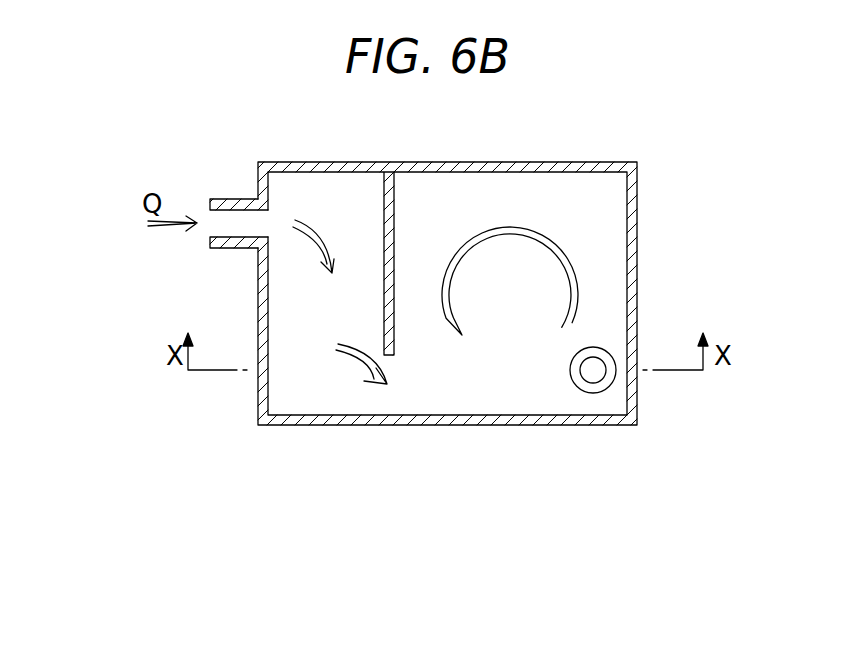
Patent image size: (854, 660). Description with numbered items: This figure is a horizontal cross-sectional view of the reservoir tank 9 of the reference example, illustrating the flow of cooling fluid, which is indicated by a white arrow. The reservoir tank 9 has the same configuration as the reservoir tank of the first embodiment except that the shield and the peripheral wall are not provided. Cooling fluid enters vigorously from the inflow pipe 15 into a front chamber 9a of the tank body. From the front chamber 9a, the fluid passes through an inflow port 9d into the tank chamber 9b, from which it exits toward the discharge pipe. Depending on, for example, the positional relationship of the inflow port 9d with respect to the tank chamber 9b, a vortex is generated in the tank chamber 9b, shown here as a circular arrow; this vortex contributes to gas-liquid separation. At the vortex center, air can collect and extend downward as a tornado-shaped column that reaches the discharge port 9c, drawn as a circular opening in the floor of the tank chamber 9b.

The reservoir tank 9 is at (443, 552).
The front chamber 9a is at (317, 195).
The tank chamber 9b is at (445, 198).
The discharge port 9c is at (593, 375).
The inflow port 9d is at (388, 394).
The inflow pipe 15 is at (229, 262).